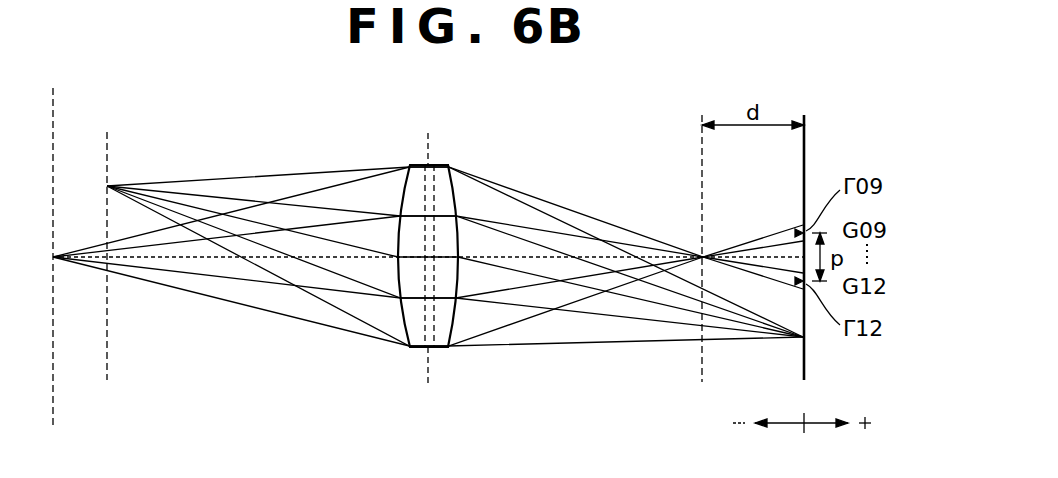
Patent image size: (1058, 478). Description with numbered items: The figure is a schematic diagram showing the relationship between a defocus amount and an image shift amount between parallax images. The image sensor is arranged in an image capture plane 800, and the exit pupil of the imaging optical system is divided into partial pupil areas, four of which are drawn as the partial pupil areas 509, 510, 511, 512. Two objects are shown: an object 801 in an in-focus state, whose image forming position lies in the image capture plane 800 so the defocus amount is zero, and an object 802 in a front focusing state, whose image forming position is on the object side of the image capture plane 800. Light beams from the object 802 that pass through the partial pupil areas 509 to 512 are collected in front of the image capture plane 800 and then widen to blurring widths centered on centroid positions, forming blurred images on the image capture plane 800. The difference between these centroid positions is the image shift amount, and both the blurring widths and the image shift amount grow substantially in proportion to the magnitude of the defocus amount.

The object 802 is at (55, 115).
The object 801 is at (108, 148).
The partial pupil area 512 is at (441, 187).
The partial pupil area 511 is at (444, 233).
The partial pupil area 510 is at (444, 278).
The partial pupil area 509 is at (447, 326).
The image capture plane 800 is at (806, 366).